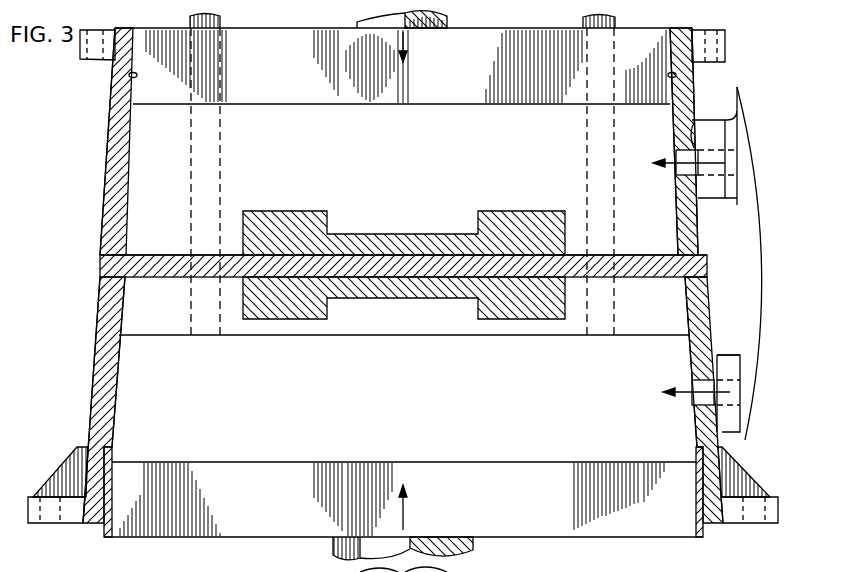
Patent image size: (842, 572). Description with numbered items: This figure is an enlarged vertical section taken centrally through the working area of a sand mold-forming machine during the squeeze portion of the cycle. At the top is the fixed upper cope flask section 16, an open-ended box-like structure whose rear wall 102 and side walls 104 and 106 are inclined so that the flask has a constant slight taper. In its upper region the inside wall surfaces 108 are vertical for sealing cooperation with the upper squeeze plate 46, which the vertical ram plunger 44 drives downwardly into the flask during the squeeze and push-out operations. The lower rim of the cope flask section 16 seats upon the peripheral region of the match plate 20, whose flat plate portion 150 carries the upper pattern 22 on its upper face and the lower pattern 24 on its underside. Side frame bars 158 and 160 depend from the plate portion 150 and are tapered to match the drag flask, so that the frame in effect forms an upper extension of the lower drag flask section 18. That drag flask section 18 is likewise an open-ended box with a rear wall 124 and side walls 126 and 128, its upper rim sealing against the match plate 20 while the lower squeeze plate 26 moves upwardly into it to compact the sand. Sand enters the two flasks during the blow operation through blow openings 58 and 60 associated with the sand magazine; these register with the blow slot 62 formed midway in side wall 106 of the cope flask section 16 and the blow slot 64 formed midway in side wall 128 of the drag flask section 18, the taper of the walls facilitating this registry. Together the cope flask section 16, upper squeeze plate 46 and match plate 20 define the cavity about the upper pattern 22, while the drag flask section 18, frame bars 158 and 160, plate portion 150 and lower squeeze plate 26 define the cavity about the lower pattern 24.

The upper cope flask section 16 is at (104, 114).
The lower drag flask section 18 is at (90, 338).
The match plate 20 is at (93, 258).
The upper pattern 22 is at (410, 234).
The lower pattern 24 is at (416, 289).
The lower squeeze plate 26 is at (680, 518).
The vertical ram plunger 44 is at (357, 23).
The upper squeeze plate 46 is at (143, 34).
The blow opening 58 is at (724, 158).
The blow opening 60 is at (740, 387).
The blow slot 62 is at (694, 124).
The blow slot 64 is at (718, 372).
The rear wall 102 is at (667, 242).
The side wall 104 is at (108, 137).
The side wall 106 is at (696, 229).
The vertical inside wall surfaces 108 is at (133, 75).
The rear wall 124 is at (688, 330).
The side wall 126 is at (92, 413).
The side wall 128 is at (657, 343).
The plate portion 150 is at (162, 256).
The side frame bar 158 is at (100, 302).
The side frame bar 160 is at (695, 291).